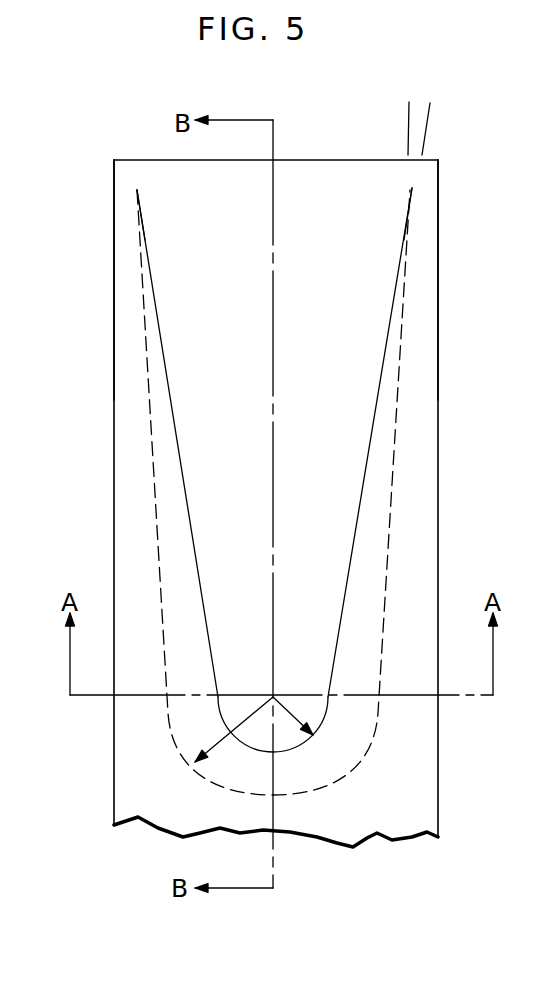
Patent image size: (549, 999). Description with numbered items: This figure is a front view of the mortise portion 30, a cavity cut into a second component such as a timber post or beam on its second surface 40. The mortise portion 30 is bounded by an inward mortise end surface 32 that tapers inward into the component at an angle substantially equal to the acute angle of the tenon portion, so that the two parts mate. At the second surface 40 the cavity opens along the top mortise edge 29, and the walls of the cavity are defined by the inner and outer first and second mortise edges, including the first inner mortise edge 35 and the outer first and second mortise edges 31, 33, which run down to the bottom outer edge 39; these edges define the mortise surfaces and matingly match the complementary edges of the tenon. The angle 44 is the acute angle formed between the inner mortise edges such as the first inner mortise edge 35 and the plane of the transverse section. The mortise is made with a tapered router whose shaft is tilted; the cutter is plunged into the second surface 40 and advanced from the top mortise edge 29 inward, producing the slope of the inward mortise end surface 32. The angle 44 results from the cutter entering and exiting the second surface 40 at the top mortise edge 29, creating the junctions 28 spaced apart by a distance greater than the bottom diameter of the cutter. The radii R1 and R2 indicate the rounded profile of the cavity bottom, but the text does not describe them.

The junctions 28 is at (135, 190).
The top mortise edge 29 is at (342, 187).
The mortise portion 30 is at (457, 250).
The outer first mortise edge 31 is at (348, 590).
The inward mortise end surface 32 is at (343, 353).
The outer second mortise edge 33 is at (195, 550).
The first inner mortise edge 35 is at (395, 520).
The bottom outer edge 39 is at (297, 755).
The second surface 40 is at (392, 797).
The angle 44 is at (375, 123).
The groove bottom radius R1 is at (305, 723).
The worn profile radius R2 is at (213, 742).